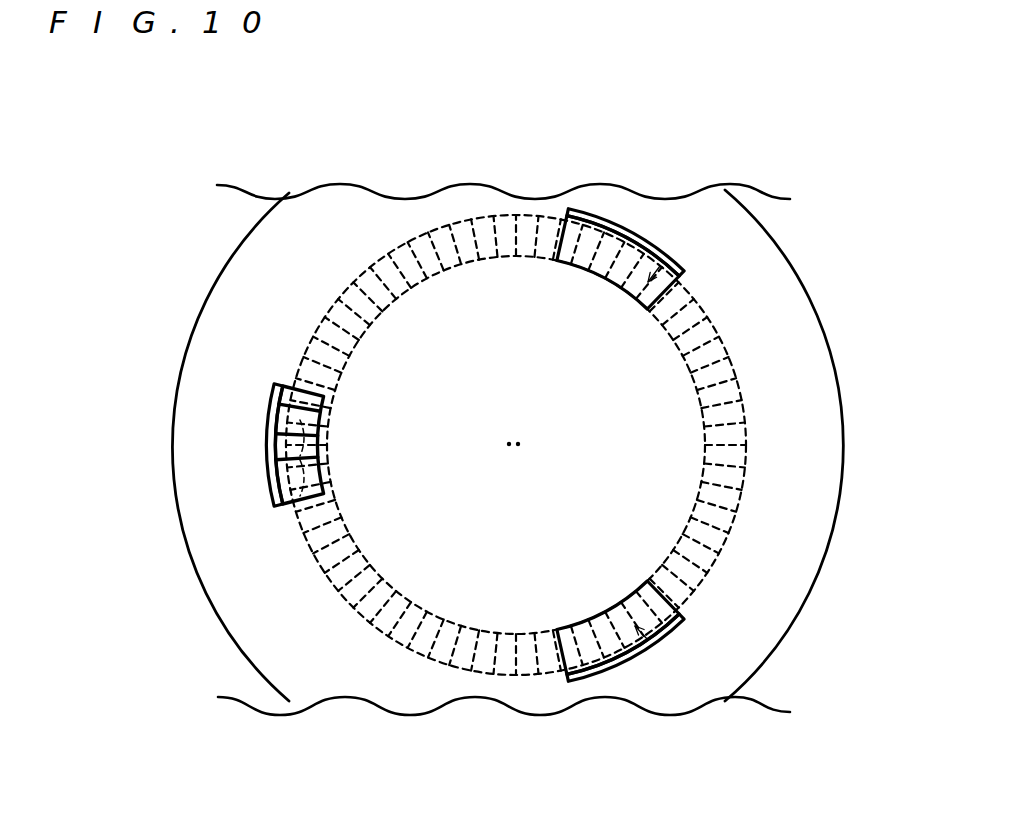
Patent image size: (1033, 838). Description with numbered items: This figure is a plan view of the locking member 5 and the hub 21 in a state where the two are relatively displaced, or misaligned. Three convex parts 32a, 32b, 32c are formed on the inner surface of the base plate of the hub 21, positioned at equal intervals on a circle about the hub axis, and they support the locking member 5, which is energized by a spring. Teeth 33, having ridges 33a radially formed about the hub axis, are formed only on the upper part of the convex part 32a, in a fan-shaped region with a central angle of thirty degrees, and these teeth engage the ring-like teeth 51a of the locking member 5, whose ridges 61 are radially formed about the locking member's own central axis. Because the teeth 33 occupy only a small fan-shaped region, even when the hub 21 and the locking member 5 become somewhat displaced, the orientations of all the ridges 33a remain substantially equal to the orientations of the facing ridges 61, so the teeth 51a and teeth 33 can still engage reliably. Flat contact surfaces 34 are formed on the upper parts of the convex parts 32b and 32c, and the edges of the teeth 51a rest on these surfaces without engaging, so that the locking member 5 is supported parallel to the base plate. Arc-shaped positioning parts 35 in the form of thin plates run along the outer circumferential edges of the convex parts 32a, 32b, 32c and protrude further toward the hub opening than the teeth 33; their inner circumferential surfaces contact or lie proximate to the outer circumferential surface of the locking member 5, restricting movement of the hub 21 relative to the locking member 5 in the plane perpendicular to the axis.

The hub 21 is at (807, 308).
The locking member 5 is at (554, 445).
The teeth 51a is at (704, 416).
The convex part 32a is at (313, 430).
The convex part 32b is at (672, 592).
The convex part 32c is at (648, 308).
The teeth 33 is at (313, 474).
The ridges 33a is at (283, 478).
The ridges 61 is at (337, 497).
The contact surfaces 34 is at (652, 276).
The positioning parts 35 is at (640, 238).